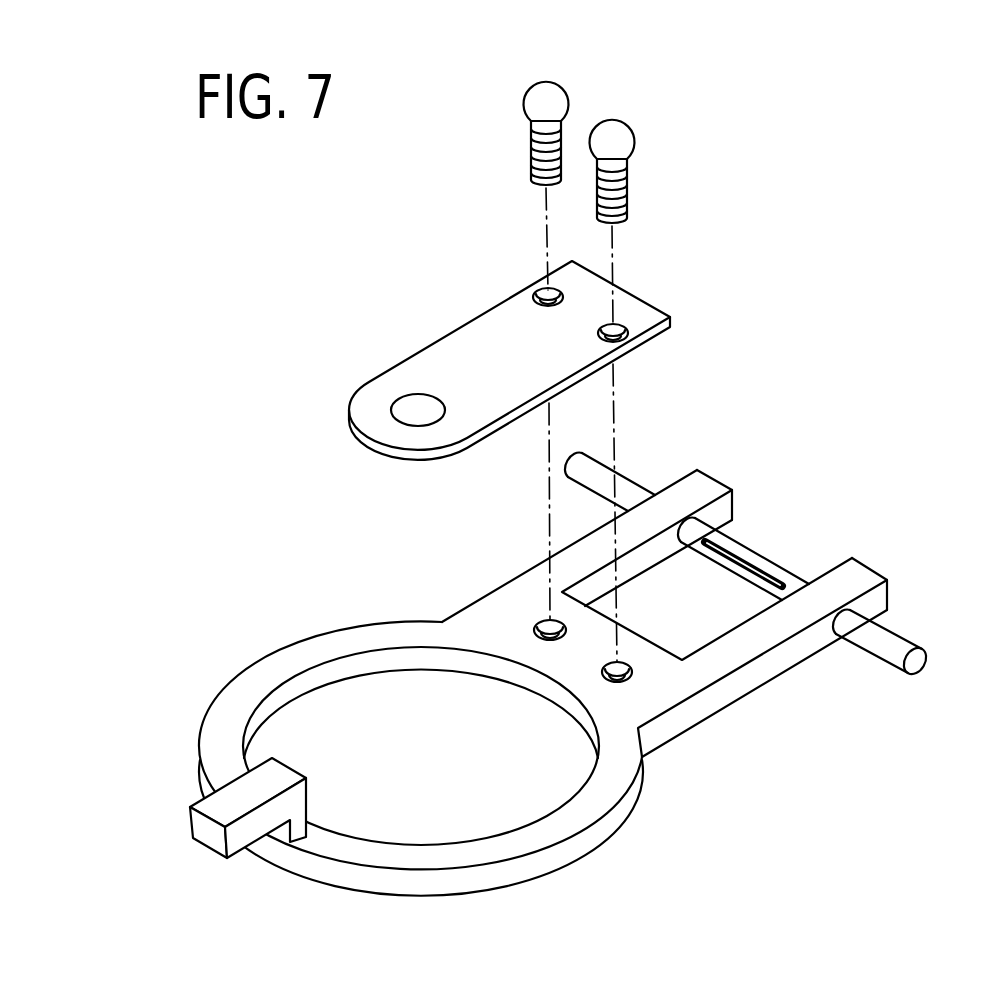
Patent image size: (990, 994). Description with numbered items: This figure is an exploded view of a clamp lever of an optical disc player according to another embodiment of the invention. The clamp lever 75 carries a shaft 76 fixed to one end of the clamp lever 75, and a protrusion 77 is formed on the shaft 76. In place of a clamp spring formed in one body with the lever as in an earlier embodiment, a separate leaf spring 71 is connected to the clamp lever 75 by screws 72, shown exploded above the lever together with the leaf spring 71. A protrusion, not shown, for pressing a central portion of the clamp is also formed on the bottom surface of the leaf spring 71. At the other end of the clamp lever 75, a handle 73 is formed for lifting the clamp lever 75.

The leaf spring 71 is at (640, 313).
The screws 72 is at (556, 103).
The handle 73 is at (243, 788).
The clamp lever 75 is at (523, 597).
The shaft 76 is at (890, 637).
The protrusion 77 is at (752, 556).